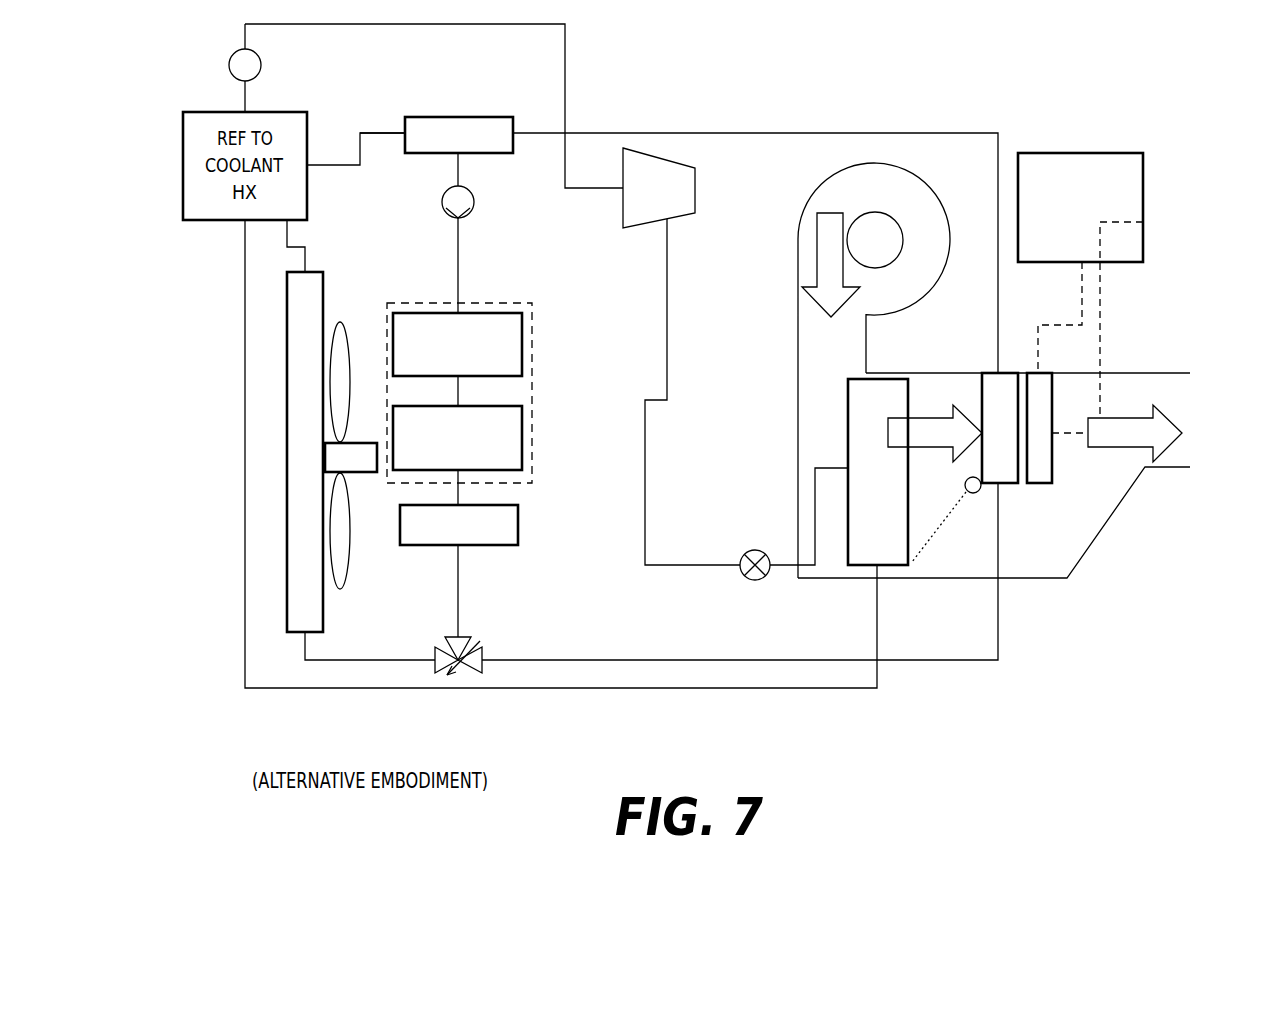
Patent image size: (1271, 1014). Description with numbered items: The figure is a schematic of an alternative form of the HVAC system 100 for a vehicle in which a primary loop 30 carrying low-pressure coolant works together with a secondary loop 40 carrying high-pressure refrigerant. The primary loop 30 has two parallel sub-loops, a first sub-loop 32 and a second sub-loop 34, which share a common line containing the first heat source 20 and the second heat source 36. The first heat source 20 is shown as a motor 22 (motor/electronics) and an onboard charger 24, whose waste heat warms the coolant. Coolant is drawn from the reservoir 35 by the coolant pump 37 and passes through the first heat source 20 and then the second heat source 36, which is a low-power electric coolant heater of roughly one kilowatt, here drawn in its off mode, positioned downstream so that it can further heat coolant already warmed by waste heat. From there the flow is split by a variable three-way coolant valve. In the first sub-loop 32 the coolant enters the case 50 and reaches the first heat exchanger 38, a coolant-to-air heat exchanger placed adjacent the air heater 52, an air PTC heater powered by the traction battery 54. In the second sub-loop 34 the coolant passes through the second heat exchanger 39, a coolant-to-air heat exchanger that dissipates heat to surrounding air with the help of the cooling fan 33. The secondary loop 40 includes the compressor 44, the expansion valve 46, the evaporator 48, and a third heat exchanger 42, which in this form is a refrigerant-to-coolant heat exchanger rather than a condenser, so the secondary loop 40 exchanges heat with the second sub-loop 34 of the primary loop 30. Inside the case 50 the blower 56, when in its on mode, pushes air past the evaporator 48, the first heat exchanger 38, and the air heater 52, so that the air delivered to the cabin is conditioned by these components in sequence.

The HVAC system 100 is at (1256, 82).
The first heat source 20 is at (532, 360).
The motor 22 is at (522, 328).
The onboard charger 24 is at (522, 445).
The primary loop 30 is at (370, 131).
The first sub-loop 32 is at (976, 131).
The cooling fan 33 is at (350, 370).
The second sub-loop 34 is at (392, 131).
The reservoir 35 is at (488, 117).
The second heat source 36 is at (518, 525).
The coolant pump 37 is at (474, 202).
The first heat exchanger 38 is at (1017, 483).
The second heat exchanger 39 is at (326, 297).
The secondary loop 40 is at (795, 690).
The third heat exchanger 42 is at (194, 110).
The compressor 44 is at (697, 196).
The expansion valve 46 is at (752, 550).
The evaporator 48 is at (908, 470).
The case 50 is at (1100, 530).
The air heater 52 is at (1052, 470).
The traction battery 54 is at (1128, 152).
The blower 56 is at (828, 180).